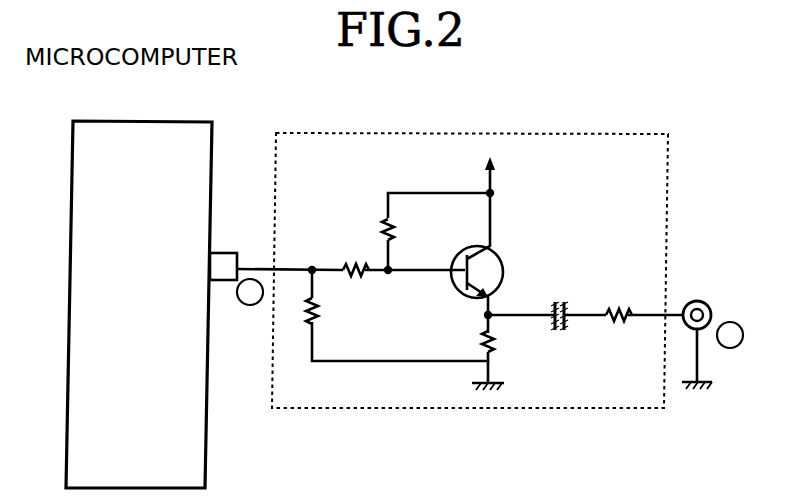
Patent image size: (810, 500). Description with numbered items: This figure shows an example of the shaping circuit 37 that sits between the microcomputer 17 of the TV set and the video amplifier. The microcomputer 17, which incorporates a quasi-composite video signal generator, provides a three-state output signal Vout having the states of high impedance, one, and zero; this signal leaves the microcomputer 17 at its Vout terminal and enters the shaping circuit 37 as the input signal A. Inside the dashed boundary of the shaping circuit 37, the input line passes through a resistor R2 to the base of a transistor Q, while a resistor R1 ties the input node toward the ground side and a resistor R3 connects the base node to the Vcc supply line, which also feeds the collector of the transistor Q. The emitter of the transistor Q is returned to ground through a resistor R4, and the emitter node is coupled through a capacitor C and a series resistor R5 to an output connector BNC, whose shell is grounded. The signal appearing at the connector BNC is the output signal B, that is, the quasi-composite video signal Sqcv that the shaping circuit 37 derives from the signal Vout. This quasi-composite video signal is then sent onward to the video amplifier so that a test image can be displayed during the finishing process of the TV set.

The microcomputer 17 is at (172, 134).
The shaping circuit 37 is at (494, 270).
The resistor R1 is at (298, 311).
The resistor R2 is at (351, 258).
The resistor R3 is at (371, 226).
The resistor R4 is at (468, 339).
The resistor R5 is at (617, 302).
The capacitor C is at (559, 330).
The transistor Q is at (477, 260).
The BNC connector BNC is at (715, 304).
The input signal A is at (250, 292).
The output signal B is at (730, 335).